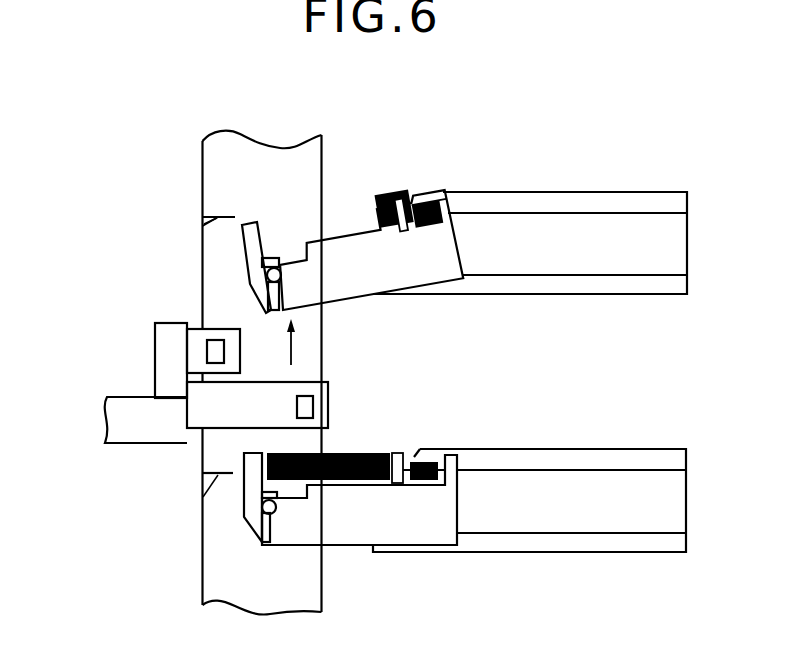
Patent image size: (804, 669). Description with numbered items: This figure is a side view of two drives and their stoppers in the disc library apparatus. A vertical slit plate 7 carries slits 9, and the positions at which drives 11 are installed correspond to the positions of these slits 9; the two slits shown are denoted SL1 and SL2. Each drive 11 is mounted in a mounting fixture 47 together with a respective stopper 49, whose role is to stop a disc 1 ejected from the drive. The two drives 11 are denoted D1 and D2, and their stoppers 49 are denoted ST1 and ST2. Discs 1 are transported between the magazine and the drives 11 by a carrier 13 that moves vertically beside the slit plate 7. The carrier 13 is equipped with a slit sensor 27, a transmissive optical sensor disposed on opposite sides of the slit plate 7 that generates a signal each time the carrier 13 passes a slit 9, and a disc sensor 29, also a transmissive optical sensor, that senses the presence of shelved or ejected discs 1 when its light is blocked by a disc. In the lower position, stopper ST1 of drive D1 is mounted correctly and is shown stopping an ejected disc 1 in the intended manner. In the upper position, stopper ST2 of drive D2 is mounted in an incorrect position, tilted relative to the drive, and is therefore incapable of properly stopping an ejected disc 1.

The disc 1 is at (387, 195).
The slit plate 7 is at (270, 150).
The slit 9 is at (228, 213).
The drive 11 is at (610, 202).
The carrier 13 is at (138, 397).
The slit sensor 27 is at (218, 350).
The disc sensor 29 is at (313, 408).
The mounting fixture 47 is at (623, 260).
The stopper 49 is at (405, 277).
The slit SL1 is at (218, 473).
The slit SL2 is at (218, 218).
The stopper ST1 is at (352, 528).
The stopper ST2 is at (352, 280).
The drive D1 is at (535, 462).
The drive D2 is at (523, 203).